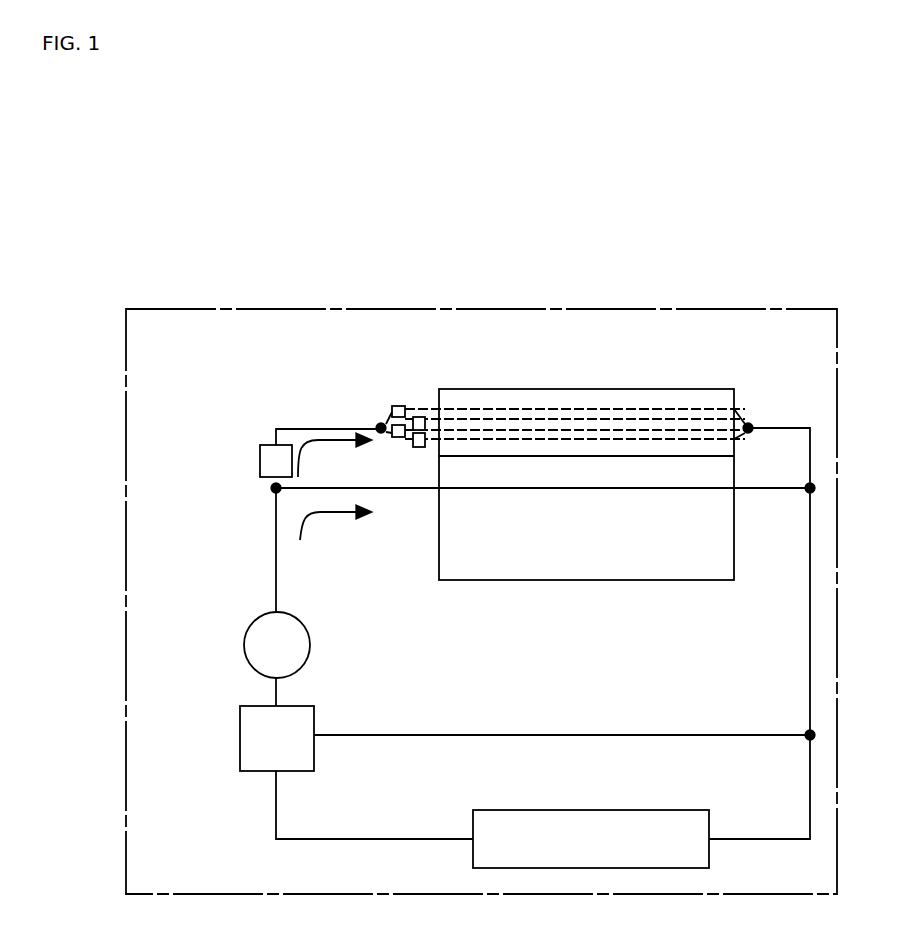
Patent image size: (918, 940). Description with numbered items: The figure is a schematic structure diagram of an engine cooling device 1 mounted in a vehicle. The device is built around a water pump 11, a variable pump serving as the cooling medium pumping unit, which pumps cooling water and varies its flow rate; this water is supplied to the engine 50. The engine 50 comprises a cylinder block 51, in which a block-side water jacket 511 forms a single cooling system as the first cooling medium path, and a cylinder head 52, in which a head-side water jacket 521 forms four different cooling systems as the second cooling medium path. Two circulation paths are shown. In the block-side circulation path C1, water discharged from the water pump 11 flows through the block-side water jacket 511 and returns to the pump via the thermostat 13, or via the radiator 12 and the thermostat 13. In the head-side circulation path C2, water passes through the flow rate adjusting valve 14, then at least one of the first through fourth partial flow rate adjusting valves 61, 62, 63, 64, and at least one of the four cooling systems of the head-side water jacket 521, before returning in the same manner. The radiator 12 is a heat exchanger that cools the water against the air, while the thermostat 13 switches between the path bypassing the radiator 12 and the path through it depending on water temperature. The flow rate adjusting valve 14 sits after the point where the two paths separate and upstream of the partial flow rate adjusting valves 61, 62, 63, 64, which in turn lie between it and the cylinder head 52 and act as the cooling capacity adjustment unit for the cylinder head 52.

The engine cooling device 1 is at (125, 373).
The water pump 11 is at (244, 645).
The radiator 12 is at (473, 828).
The thermostat 13 is at (240, 742).
The flow rate adjusting valve 14 is at (260, 458).
The engine 50 is at (583, 500).
The cylinder block 51 is at (735, 557).
The block-side water jacket 511 is at (612, 488).
The cylinder head 52 is at (597, 382).
The head-side water jacket 521 is at (588, 408).
The first partial flow rate adjusting valve 61 is at (397, 406).
The second partial flow rate adjusting valve 62 is at (419, 417).
The third partial flow rate adjusting valve 63 is at (398, 440).
The fourth partial flow rate adjusting valve 64 is at (420, 447).
The block-side circulation path C1 is at (302, 532).
The head-side circulation path C2 is at (320, 442).